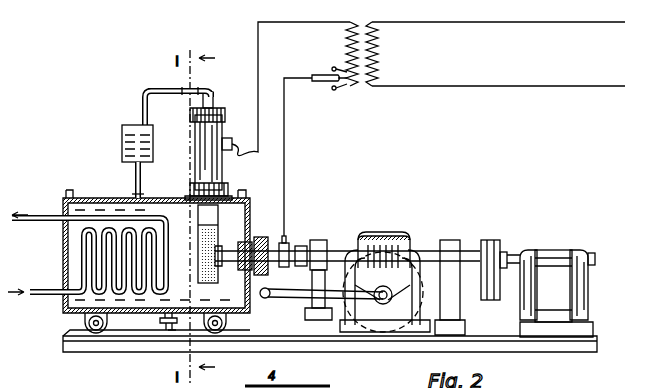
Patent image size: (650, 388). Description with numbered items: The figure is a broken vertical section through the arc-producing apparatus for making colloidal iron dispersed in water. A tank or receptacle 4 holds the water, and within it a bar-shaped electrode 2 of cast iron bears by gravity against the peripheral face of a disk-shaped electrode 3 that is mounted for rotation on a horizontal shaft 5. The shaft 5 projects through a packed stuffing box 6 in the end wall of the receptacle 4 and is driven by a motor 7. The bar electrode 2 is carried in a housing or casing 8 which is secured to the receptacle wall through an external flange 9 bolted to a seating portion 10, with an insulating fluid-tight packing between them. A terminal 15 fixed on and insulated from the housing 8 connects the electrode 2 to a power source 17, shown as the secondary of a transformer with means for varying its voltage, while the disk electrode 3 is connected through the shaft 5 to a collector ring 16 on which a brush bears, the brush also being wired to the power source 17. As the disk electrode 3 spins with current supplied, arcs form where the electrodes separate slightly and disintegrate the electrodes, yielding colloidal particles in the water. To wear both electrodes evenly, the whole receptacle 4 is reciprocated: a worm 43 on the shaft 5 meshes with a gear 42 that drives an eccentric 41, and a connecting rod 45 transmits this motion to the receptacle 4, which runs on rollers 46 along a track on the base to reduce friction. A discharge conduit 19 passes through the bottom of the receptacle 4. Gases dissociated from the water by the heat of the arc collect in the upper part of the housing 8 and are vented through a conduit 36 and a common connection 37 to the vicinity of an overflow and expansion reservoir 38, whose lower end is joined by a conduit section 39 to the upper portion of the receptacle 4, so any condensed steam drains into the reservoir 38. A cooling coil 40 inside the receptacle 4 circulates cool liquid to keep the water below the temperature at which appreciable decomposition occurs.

The bar-shaped electrode 2 is at (218, 224).
The disk-shaped electrode 3 is at (220, 270).
The tank or receptacle 4 is at (90, 196).
The horizontal shaft 5 is at (240, 248).
The stuffing box 6 is at (260, 237).
The motor 7 is at (552, 256).
The housing or casing 8 is at (195, 160).
The external flange 9 is at (226, 180).
The seating portion 10 is at (186, 197).
The terminal 15 is at (232, 140).
The collector ring 16 is at (290, 240).
The power source 17 is at (468, 56).
The discharge conduit 19 is at (330, 335).
The conduit 36 is at (188, 88).
The common connection 37 is at (142, 110).
The overflow and expansion reservoir 38 is at (153, 140).
The conduit section 39 is at (134, 178).
The cooling coil 40 is at (172, 228).
The eccentric 41 is at (355, 280).
The gear 42 is at (410, 282).
The worm 43 is at (386, 238).
The connecting rod 45 is at (292, 294).
The rollers 46 is at (235, 325).